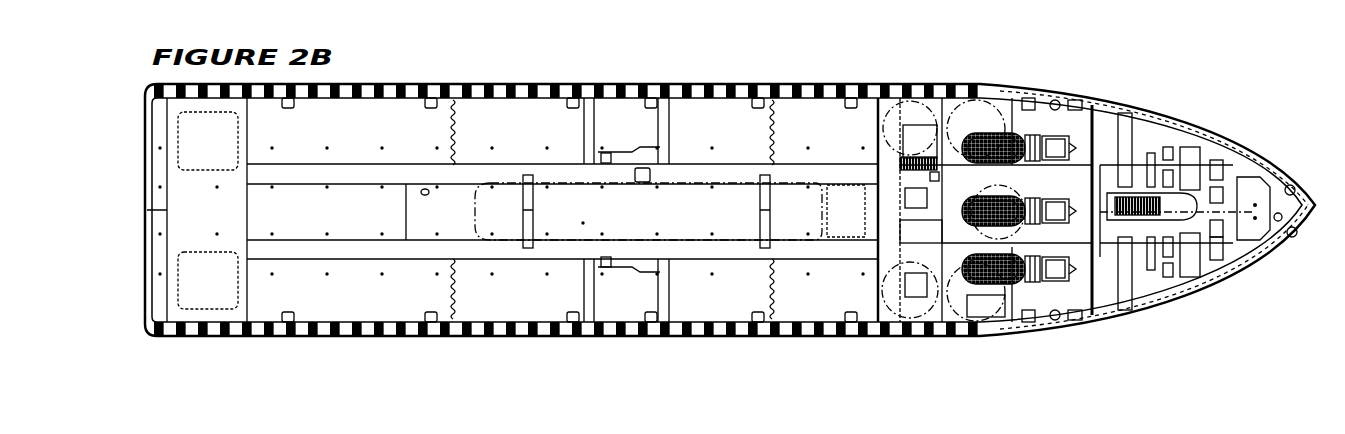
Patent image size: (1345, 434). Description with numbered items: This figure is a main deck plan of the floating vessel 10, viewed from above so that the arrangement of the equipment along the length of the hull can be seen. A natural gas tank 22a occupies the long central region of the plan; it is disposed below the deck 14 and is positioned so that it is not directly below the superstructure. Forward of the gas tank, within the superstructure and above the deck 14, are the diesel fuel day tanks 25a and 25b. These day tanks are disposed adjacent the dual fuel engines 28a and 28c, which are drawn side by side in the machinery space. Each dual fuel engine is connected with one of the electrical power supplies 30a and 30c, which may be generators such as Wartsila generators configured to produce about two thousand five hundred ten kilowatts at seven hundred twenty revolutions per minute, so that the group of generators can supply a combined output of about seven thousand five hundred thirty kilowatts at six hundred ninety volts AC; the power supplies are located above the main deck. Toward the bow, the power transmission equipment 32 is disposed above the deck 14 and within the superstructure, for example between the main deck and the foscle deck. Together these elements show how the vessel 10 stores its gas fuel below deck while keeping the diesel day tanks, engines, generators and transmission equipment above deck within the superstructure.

The floating vessel 10 is at (1294, 62).
The deck 14 is at (512, 112).
The natural gas tank 22a is at (753, 180).
The diesel fuel day tank 25a is at (905, 262).
The diesel fuel day tank 25b is at (910, 235).
The dual fuel engine 28a is at (1003, 293).
The dual fuel engine 28c is at (1007, 137).
The electrical power supply 30a is at (1060, 282).
The electrical power supply 30c is at (1055, 147).
The power transmission equipment 32 is at (1192, 148).